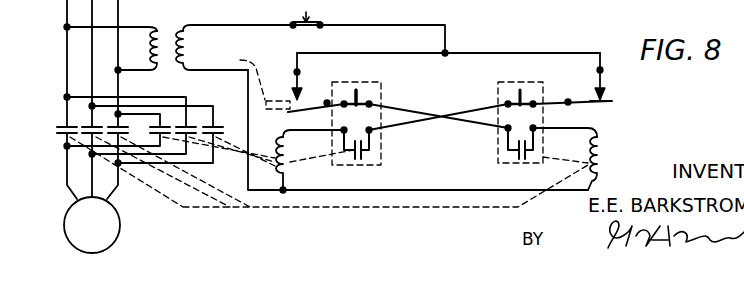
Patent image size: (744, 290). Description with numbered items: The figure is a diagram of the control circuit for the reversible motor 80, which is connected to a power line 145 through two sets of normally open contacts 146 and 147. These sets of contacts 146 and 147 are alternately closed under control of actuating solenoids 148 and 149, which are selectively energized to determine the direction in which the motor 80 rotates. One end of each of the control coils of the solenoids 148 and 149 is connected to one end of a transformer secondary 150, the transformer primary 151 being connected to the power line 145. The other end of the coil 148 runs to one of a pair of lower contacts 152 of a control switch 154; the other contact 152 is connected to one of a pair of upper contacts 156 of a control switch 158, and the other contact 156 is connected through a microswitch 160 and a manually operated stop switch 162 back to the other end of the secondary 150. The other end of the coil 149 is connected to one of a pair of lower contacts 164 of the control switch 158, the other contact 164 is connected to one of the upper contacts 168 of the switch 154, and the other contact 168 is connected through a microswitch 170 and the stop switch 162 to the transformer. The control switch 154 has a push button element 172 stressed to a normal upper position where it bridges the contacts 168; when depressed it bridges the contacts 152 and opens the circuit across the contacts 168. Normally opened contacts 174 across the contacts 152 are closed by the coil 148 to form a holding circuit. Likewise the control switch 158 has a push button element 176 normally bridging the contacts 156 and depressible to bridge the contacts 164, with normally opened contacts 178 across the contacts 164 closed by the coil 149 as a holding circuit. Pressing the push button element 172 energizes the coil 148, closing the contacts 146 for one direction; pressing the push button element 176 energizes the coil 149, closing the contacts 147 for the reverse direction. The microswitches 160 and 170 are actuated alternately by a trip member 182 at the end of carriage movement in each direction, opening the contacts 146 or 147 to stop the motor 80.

The reversible motor 80 is at (64, 229).
The power line 145 is at (67, 12).
The normally open contacts 146 is at (214, 123).
The normally open contacts 147 is at (62, 126).
The actuating solenoid 148 is at (276, 172).
The actuating solenoid 149 is at (602, 147).
The transformer secondary 150 is at (183, 30).
The transformer primary winding 151 is at (157, 30).
The lower contacts 152 is at (343, 129).
The control switch 154 is at (362, 78).
The upper contacts 156 is at (506, 103).
The control switch 158 is at (539, 78).
The microswitch 160 is at (608, 96).
The stop switch 162 is at (311, 22).
The lower contacts 164 is at (506, 130).
The upper contacts 168 is at (327, 101).
The microswitch 170 is at (290, 96).
The push button element 172 is at (362, 100).
The normally opened contacts 174 is at (366, 150).
The push button element 176 is at (516, 100).
The normally opened contacts 178 is at (500, 160).
The trip member 182 is at (247, 79).